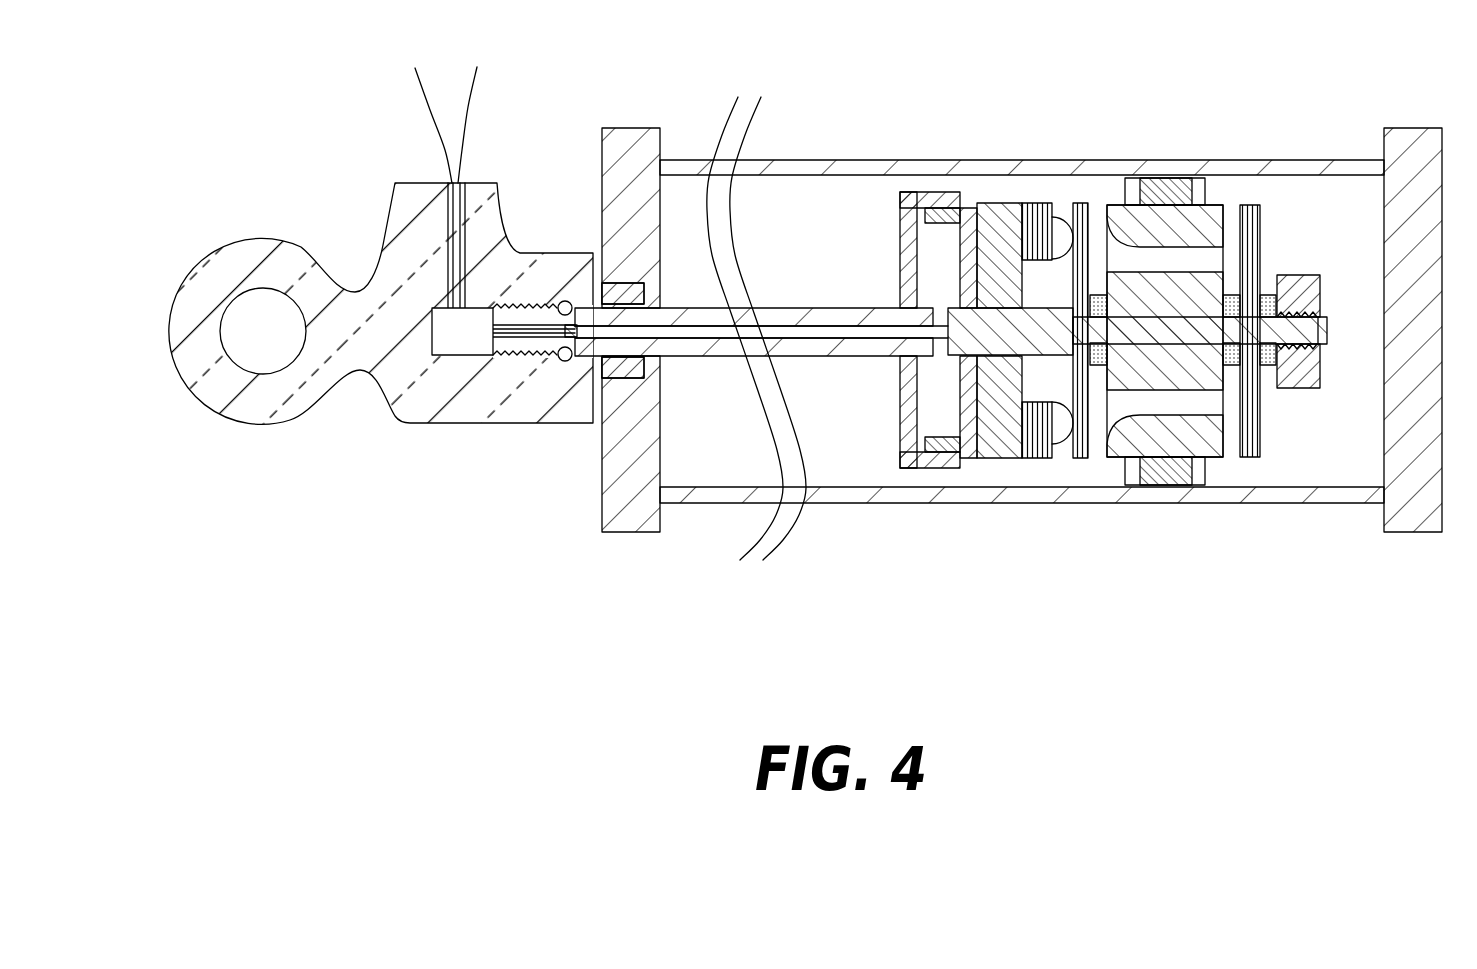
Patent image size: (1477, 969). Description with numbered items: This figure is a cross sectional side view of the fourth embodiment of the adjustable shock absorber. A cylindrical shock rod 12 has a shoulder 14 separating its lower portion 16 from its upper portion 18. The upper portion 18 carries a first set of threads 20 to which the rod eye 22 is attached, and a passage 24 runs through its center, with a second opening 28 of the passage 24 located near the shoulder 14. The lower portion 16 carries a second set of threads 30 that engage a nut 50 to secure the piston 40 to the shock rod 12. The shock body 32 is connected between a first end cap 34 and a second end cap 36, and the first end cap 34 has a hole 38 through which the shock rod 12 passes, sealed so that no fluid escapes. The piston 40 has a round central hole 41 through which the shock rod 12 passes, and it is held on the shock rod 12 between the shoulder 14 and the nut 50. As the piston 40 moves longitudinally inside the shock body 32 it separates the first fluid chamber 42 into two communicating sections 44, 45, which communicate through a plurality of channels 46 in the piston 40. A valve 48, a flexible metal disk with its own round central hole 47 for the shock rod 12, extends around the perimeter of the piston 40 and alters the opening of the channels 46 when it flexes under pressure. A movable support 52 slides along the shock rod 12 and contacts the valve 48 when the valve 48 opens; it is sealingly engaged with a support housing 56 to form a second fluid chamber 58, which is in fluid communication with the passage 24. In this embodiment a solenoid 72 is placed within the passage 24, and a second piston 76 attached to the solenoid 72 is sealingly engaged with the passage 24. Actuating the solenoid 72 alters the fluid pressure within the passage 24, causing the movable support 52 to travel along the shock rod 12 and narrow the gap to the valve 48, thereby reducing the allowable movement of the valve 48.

The shock rod 12 is at (1022, 321).
The shoulder 14 is at (1162, 427).
The lower portion 16 is at (1328, 333).
The upper portion 18 is at (1046, 325).
The first set of threads 20 is at (510, 292).
The rod eye 22 is at (243, 238).
The passage 24 is at (685, 328).
The second opening 28 is at (892, 440).
The second set of threads 30 is at (1307, 307).
The shock body 32 is at (825, 160).
The first end cap 34 is at (612, 128).
The second end cap 36 is at (1418, 142).
The hole 38 is at (651, 292).
The piston 40 is at (1202, 327).
The round central hole 41 is at (1183, 315).
The first fluid chamber 42 is at (788, 215).
The communicating section 44 is at (700, 474).
The communicating section 45 is at (1340, 480).
The channels 46 is at (1112, 205).
The round central hole 47 is at (1100, 368).
The valve 48 is at (1083, 205).
The nut 50 is at (1317, 305).
The movable support 52 is at (990, 213).
The support housing 56 is at (924, 330).
The second fluid chamber 58 is at (943, 233).
The solenoid 72 is at (460, 345).
The second piston 76 is at (568, 301).